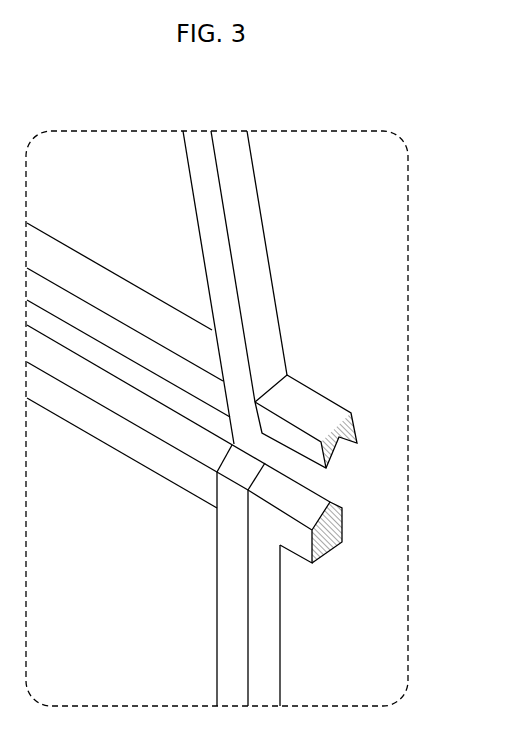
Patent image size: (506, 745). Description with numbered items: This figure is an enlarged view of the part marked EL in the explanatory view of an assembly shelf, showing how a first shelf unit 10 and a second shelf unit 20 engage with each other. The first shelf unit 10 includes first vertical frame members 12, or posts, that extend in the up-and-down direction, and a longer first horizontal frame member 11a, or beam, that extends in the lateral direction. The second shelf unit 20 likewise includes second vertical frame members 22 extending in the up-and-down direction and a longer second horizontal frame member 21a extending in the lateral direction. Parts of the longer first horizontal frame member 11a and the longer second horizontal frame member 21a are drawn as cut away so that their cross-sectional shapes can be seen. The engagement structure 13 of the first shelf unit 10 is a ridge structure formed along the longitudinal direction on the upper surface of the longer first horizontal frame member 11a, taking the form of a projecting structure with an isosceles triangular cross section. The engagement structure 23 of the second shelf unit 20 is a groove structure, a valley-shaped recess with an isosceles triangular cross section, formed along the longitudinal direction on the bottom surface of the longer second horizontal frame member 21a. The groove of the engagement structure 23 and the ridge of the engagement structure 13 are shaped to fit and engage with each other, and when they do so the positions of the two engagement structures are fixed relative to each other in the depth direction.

The enlarged part EL is at (436, 108).
The first shelf unit 10 is at (256, 575).
The longer first horizontal frame member 11a is at (136, 459).
The first vertical frame member 12 is at (218, 614).
The engagement structure 13 is at (344, 512).
The second shelf unit 20 is at (258, 287).
The longer second horizontal frame member 21a is at (118, 279).
The second vertical frame member 22 is at (261, 222).
The engagement structure 23 is at (334, 456).